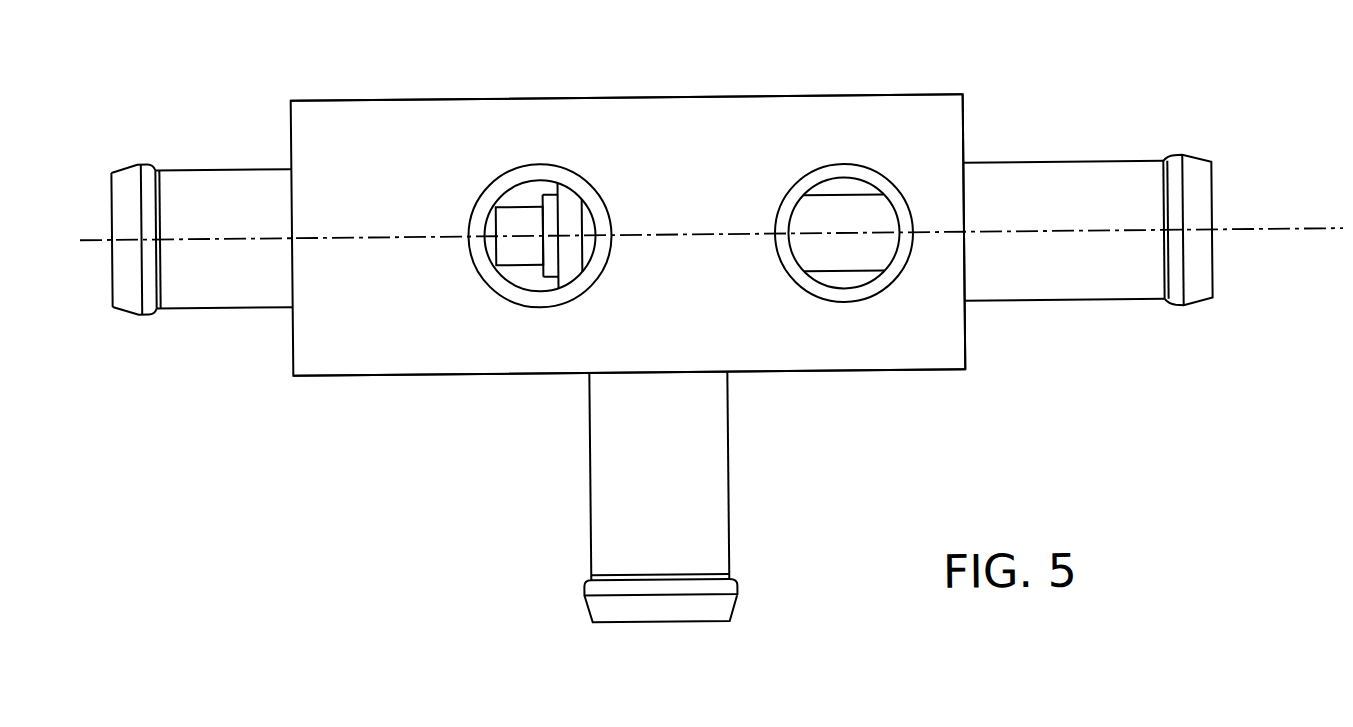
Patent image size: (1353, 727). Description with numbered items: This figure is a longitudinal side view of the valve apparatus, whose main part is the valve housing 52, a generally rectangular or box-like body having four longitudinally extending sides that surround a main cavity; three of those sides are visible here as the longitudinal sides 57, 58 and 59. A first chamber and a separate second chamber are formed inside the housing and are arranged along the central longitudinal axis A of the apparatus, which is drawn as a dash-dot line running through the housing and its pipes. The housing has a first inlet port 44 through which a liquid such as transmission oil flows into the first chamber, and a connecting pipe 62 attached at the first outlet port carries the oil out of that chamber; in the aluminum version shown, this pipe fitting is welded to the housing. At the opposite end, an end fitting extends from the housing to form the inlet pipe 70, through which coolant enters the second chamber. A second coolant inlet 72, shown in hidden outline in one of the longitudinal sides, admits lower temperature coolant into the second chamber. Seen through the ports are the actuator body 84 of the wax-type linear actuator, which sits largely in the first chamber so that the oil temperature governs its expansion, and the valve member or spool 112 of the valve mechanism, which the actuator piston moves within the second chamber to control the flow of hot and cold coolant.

The first inlet port 44 is at (853, 192).
The valve housing 52 is at (951, 150).
The longitudinal side 57 is at (799, 372).
The longitudinal side 58 is at (573, 128).
The longitudinal side 59 is at (461, 98).
The connecting pipe 62 is at (1060, 191).
The inlet pipe 70 is at (230, 194).
The second coolant inlet 72 is at (622, 372).
The actuator body 84 is at (865, 249).
The valve member or spool 112 is at (513, 221).
The central longitudinal axis A is at (1273, 235).